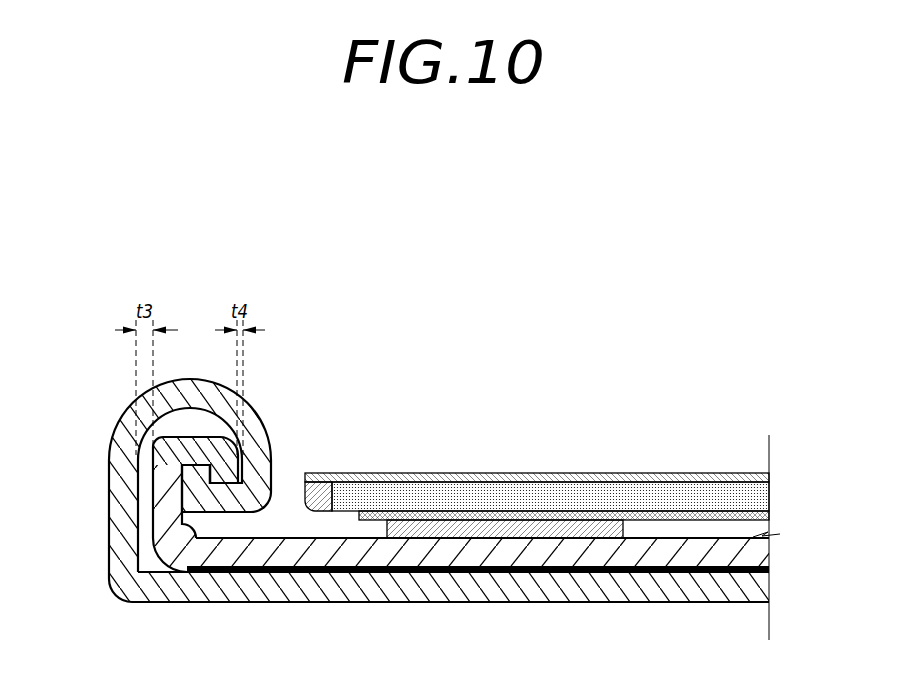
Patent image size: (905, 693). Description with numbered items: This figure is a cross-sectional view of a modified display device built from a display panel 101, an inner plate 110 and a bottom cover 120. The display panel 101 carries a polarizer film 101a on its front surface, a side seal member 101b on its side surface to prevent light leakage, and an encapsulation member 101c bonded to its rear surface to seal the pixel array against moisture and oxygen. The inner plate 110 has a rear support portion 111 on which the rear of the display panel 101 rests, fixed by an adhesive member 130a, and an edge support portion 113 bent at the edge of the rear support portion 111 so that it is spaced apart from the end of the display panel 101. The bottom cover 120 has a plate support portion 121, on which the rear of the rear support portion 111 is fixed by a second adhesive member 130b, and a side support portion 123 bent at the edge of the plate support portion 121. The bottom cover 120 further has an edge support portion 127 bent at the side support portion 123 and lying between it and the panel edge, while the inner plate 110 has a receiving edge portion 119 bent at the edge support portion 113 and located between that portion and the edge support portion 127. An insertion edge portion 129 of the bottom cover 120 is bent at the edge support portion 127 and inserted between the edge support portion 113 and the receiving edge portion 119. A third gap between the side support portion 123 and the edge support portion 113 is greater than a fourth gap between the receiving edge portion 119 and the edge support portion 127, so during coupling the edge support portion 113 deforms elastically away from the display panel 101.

The display panel 101 is at (432, 496).
The polarizer film 101a is at (535, 478).
The side seal member 101b is at (320, 497).
The encapsulation member 101c is at (682, 517).
The inner plate 110 is at (788, 553).
The rear support portion 111 is at (555, 557).
The edge support portion 113 is at (122, 508).
The receiving edge portion 119 is at (223, 473).
The bottom cover 120 is at (788, 586).
The plate support portion 121 is at (380, 587).
The side support portion 123 is at (168, 485).
The edge support portion 127 is at (260, 466).
The insertion edge portion 129 is at (197, 472).
The adhesive member 130a is at (492, 530).
The adhesive member 130b is at (667, 572).